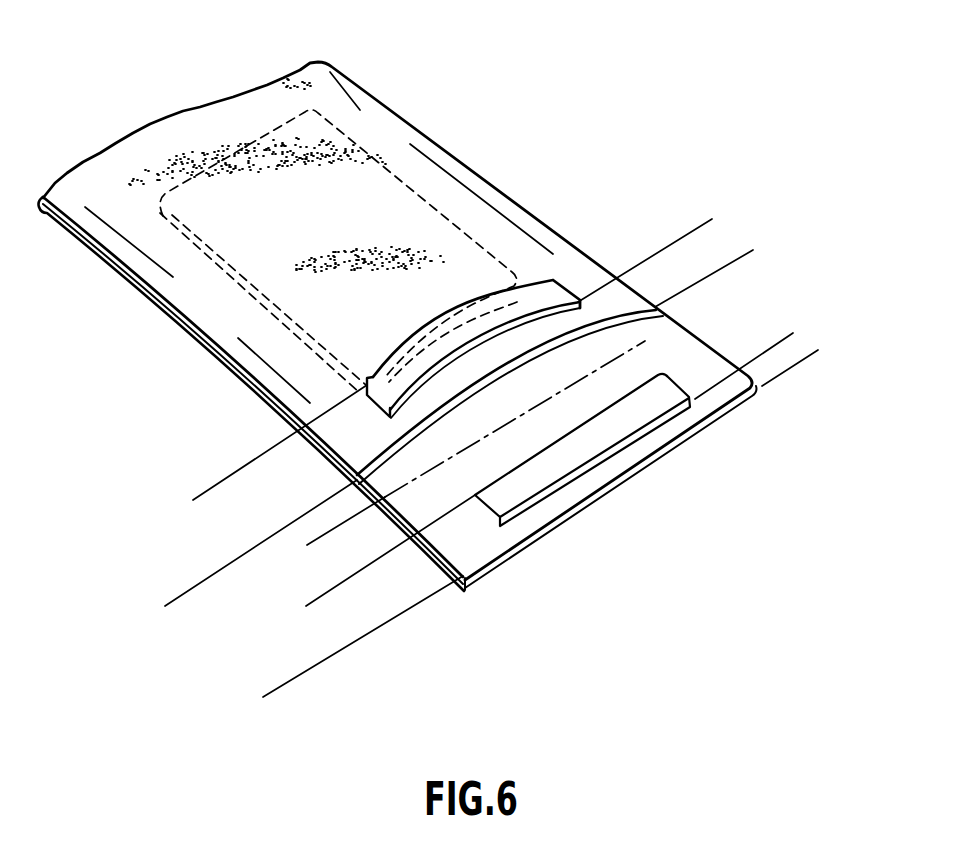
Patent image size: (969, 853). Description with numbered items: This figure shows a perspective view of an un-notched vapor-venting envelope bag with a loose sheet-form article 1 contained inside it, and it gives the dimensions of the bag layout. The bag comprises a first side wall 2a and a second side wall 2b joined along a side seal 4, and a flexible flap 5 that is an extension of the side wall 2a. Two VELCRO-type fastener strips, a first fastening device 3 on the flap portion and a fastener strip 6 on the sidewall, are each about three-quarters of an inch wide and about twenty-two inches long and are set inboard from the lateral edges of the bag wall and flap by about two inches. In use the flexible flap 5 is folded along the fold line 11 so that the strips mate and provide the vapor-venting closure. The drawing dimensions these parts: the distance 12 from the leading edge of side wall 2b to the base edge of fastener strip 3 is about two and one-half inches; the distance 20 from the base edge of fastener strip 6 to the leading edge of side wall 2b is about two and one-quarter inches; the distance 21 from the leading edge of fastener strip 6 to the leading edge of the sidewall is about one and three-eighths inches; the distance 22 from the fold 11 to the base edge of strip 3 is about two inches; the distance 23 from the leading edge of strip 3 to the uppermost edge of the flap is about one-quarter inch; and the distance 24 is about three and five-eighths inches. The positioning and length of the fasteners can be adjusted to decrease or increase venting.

The loose article 1 is at (522, 255).
The first side wall 2a is at (563, 360).
The second side wall 2b is at (314, 87).
The first fastening device 3 is at (588, 456).
The side seal 4 is at (492, 188).
The flexible flap 5 is at (468, 543).
The fastener strip 6 is at (396, 379).
The fold line 11 is at (645, 352).
The distance between leading edge of sidewall 2b and base edge of fastener strip 3 12 is at (325, 594).
The distance between base edge of fastener strip 6 and leading edge of sidewall 2b 20 is at (263, 543).
The distance between leading edge of fastener strip 6 and leading edge of sidewall 21 is at (813, 303).
The distance between fold 11 and base edge of fastener strip 3 22 is at (317, 542).
The distance between leading edge of fastener strip 3 and uppermost edge of flap 23 is at (740, 310).
The distance 24 is at (277, 693).